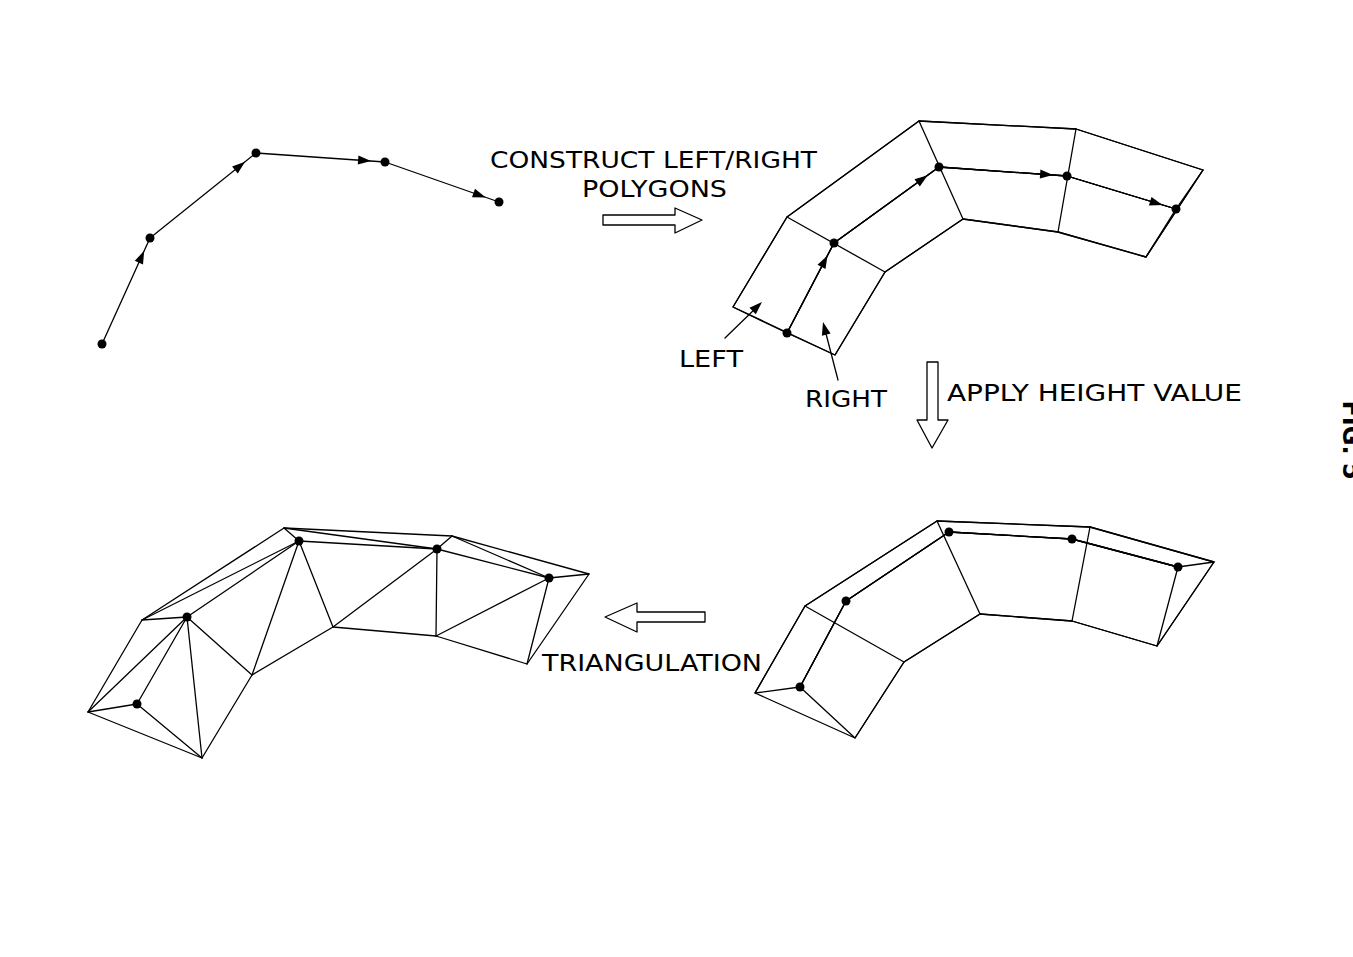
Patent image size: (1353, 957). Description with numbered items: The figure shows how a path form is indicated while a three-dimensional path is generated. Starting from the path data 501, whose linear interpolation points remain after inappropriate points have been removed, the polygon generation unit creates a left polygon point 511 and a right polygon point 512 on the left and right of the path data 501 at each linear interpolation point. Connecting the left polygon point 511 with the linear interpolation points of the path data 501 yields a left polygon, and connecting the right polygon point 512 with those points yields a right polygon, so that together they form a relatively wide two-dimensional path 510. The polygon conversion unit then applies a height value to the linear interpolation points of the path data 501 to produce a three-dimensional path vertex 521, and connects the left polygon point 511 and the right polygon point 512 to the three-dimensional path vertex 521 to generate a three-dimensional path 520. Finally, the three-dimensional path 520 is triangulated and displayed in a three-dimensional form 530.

The path data 501 is at (442, 181).
The 2D path 510 is at (1145, 144).
The left polygon point 511 is at (733, 308).
The right polygon point 512 is at (835, 355).
The 3D path 520 is at (1167, 607).
The 3D path vertex 521 is at (800, 687).
The 3D form 530 is at (227, 717).